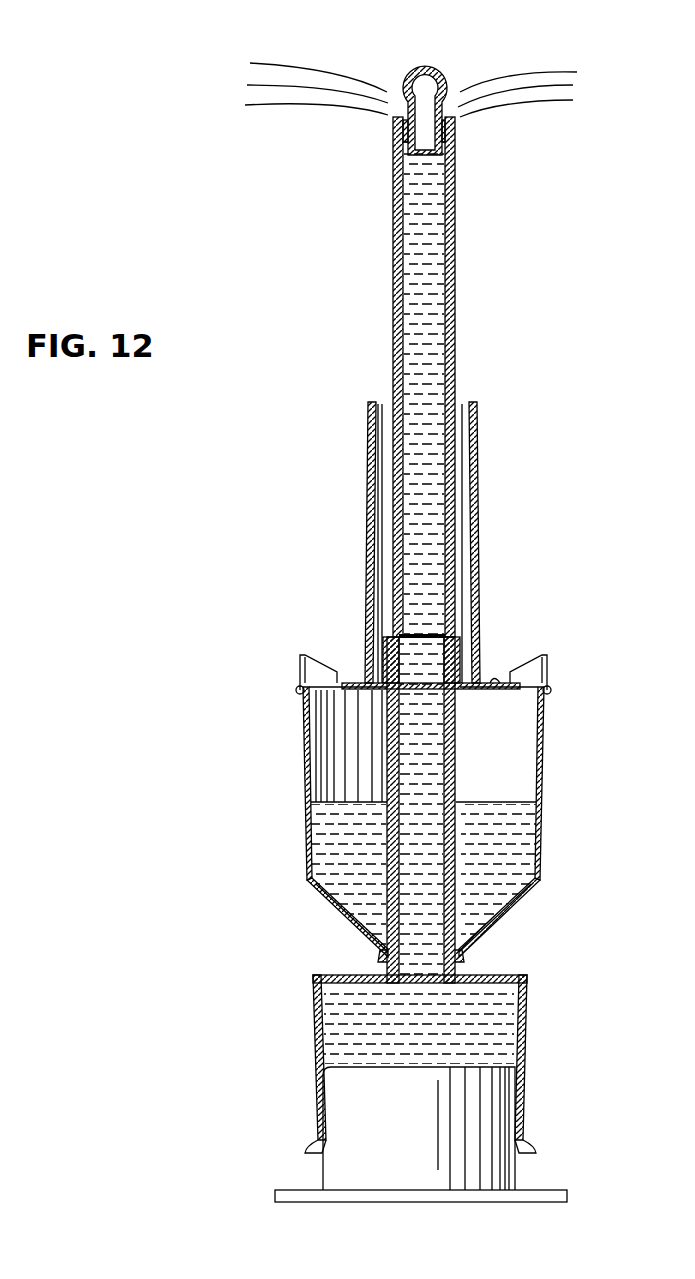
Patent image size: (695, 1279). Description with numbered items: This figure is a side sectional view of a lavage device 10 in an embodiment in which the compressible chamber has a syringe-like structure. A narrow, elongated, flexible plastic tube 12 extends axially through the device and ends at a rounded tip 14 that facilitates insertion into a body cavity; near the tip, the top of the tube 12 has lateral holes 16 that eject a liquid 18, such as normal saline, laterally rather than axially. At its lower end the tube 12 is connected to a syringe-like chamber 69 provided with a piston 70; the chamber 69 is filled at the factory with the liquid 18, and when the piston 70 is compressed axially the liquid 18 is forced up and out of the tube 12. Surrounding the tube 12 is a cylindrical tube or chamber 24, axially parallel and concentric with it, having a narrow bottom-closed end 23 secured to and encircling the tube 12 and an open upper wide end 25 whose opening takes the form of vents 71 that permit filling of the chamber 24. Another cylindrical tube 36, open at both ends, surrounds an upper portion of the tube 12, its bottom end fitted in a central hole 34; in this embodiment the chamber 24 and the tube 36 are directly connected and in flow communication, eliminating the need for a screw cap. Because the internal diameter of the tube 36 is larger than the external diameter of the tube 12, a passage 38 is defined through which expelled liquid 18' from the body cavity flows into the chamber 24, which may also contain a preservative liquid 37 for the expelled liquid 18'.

The lavage device 10 is at (518, 247).
The flexible plastic tube 12 is at (393, 273).
The rounded tip 14 is at (425, 66).
The lateral hole 16 is at (395, 124).
The liquid 18 is at (411, 563).
The expelled liquid 18' is at (457, 871).
The narrow bottom-closed end 23 is at (378, 960).
The cylindrical tube or chamber 24 is at (305, 772).
The upper wide end 25 is at (493, 676).
The central hole 34 is at (455, 763).
The cylindrical tube 36 is at (478, 505).
The preservative liquid 37 is at (490, 908).
The passage 38 is at (460, 400).
The syringe-like chamber 69 is at (525, 1048).
The piston 70 is at (392, 1163).
The vent 71 is at (322, 668).